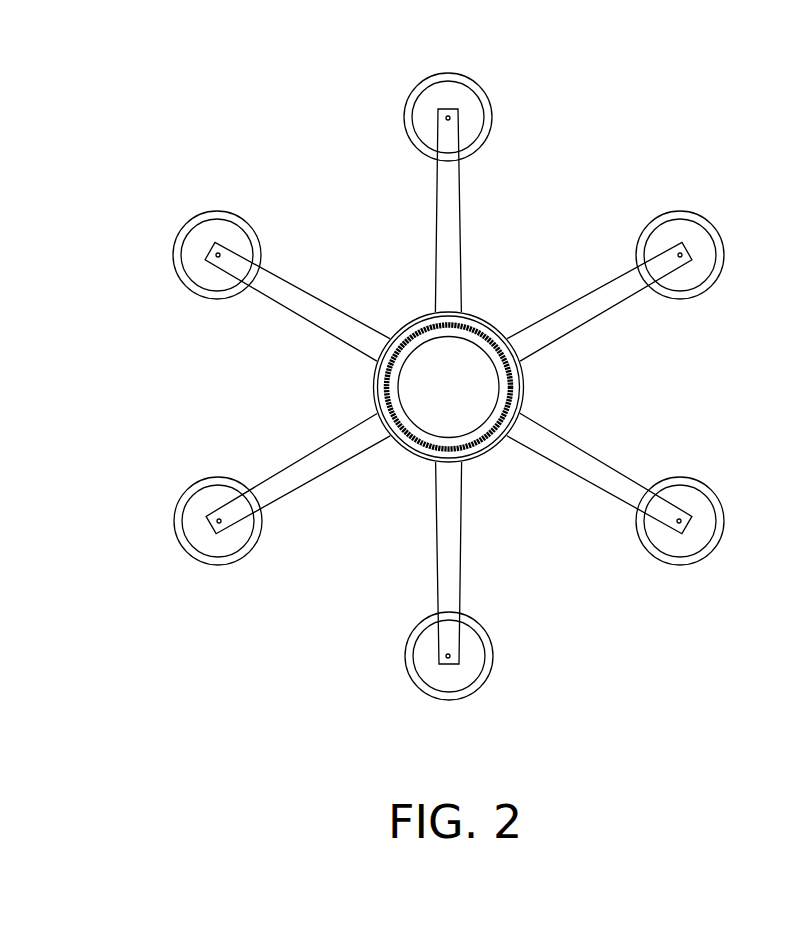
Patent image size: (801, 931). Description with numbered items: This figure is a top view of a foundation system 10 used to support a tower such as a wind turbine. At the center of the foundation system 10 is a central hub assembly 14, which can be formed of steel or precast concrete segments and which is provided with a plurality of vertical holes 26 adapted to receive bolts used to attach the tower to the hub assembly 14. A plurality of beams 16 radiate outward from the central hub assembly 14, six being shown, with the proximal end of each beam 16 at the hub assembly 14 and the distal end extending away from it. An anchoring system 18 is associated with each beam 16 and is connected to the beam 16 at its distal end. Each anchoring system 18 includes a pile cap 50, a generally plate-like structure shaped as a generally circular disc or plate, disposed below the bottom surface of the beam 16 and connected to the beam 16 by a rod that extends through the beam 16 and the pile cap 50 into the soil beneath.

The foundation system 10 is at (582, 202).
The central hub assembly 14 is at (482, 408).
The beam 16 is at (462, 232).
The anchoring system 18 is at (453, 384).
The vertical holes 26 is at (495, 448).
The pile cap 50 is at (683, 225).